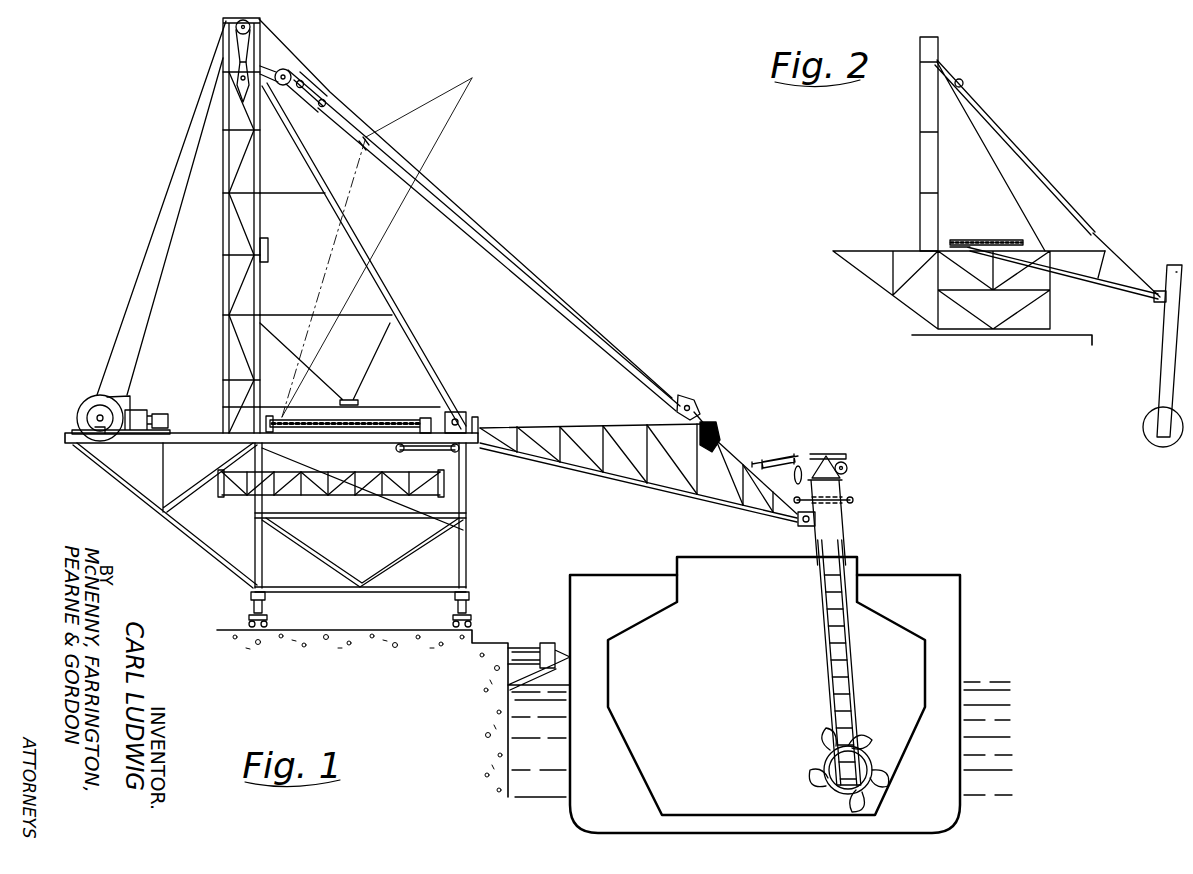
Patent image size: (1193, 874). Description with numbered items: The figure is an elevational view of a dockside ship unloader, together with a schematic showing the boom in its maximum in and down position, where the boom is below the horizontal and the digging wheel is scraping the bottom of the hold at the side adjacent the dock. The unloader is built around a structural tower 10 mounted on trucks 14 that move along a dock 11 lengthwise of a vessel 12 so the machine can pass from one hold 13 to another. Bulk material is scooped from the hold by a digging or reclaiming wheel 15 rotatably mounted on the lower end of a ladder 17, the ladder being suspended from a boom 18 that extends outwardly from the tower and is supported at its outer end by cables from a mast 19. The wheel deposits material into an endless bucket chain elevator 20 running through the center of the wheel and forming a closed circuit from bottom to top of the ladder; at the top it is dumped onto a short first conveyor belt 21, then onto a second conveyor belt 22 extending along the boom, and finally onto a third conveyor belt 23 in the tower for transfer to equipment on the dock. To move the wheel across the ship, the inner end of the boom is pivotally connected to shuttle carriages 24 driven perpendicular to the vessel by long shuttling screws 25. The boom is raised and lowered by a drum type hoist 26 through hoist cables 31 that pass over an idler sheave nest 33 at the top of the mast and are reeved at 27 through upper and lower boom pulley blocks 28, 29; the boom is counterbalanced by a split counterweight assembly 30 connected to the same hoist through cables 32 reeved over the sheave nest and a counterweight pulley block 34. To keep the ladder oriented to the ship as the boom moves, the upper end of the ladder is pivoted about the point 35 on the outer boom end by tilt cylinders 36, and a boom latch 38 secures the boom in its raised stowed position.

In FIG. 1, the structural tower 10 is at (477, 539).
In FIG. 2, the structural tower 10 is at (1061, 320).
In FIG. 1, the dock 11 is at (406, 682).
In FIG. 1, the vessel 12 is at (973, 610).
In FIG. 1, the hold 13 is at (738, 722).
In FIG. 1, the trucks 14 is at (268, 607).
In FIG. 1, the digging or reclaiming wheel 15 is at (811, 779).
In FIG. 2, the digging or reclaiming wheel 15 is at (1136, 436).
In FIG. 1, the ladder 17 is at (818, 646).
In FIG. 2, the ladder 17 is at (1154, 363).
In FIG. 1, the boom 18 is at (442, 140).
In FIG. 2, the boom 18 is at (1129, 256).
In FIG. 1, the mast 19 is at (221, 289).
In FIG. 2, the mast 19 is at (911, 165).
In FIG. 1, the endless bucket chain elevator 20 is at (857, 677).
In FIG. 1, the first conveyor belt 21 is at (852, 500).
In FIG. 1, the second conveyor belt 22 is at (674, 486).
In FIG. 1, the third conveyor belt 23 is at (342, 478).
In FIG. 1, the shuttle carriages 24 is at (448, 412).
In FIG. 1, the shuttling screws 25 is at (372, 418).
In FIG. 2, the shuttling screws 25 is at (985, 243).
In FIG. 1, the drum type hoist 26 is at (85, 395).
In FIG. 1, the cable reeving 27 is at (500, 262).
In FIG. 1, the upper boom pulley block 28 is at (292, 74).
In FIG. 1, the lower boom pulley block 29 is at (692, 398).
In FIG. 1, the split counterweight assembly 30 is at (277, 251).
In FIG. 1, the hoist cables 31 is at (132, 300).
In FIG. 1, the counterweight cables 32 is at (150, 318).
In FIG. 1, the idler sheave nest 33 is at (251, 29).
In FIG. 1, the counterweight pulley block 34 is at (236, 78).
In FIG. 1, the ladder pivot point 35 is at (803, 524).
In FIG. 1, the tilt cylinders 36 is at (777, 460).
In FIG. 1, the boom latch 38 is at (323, 108).